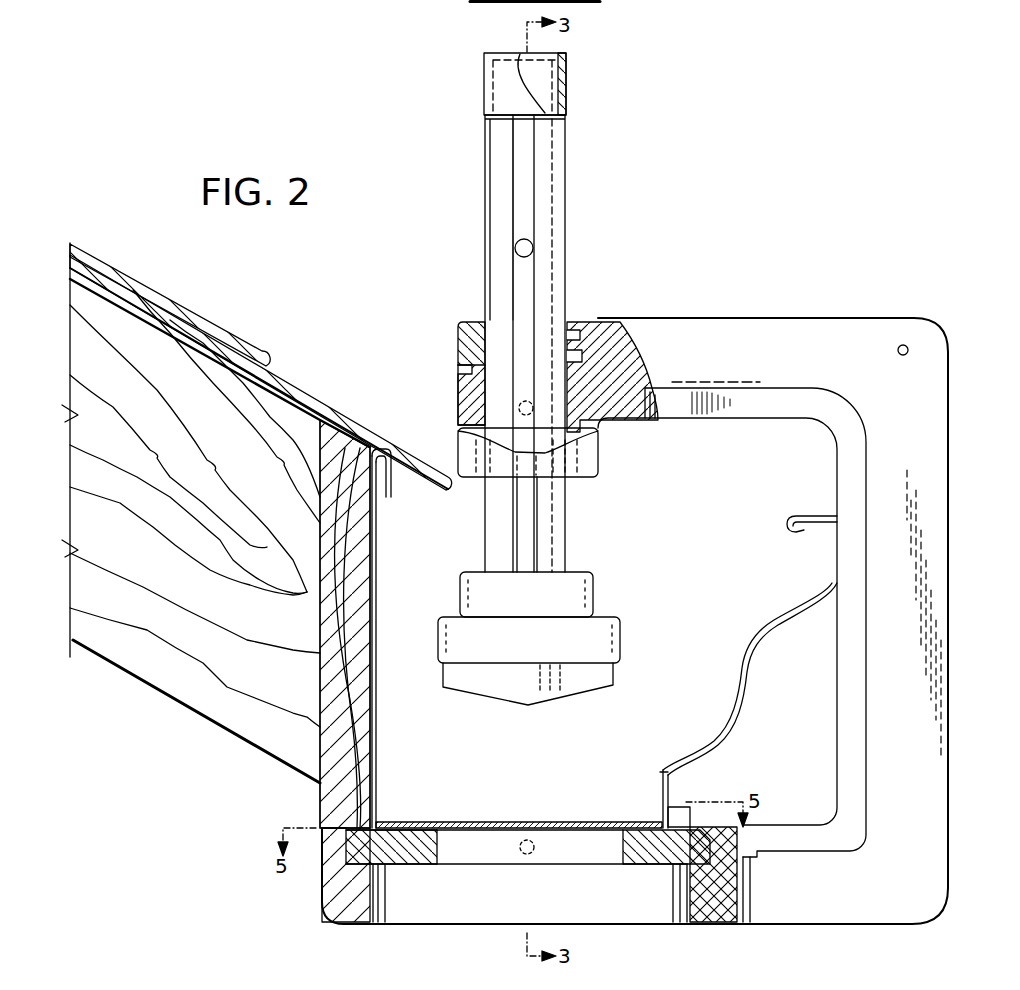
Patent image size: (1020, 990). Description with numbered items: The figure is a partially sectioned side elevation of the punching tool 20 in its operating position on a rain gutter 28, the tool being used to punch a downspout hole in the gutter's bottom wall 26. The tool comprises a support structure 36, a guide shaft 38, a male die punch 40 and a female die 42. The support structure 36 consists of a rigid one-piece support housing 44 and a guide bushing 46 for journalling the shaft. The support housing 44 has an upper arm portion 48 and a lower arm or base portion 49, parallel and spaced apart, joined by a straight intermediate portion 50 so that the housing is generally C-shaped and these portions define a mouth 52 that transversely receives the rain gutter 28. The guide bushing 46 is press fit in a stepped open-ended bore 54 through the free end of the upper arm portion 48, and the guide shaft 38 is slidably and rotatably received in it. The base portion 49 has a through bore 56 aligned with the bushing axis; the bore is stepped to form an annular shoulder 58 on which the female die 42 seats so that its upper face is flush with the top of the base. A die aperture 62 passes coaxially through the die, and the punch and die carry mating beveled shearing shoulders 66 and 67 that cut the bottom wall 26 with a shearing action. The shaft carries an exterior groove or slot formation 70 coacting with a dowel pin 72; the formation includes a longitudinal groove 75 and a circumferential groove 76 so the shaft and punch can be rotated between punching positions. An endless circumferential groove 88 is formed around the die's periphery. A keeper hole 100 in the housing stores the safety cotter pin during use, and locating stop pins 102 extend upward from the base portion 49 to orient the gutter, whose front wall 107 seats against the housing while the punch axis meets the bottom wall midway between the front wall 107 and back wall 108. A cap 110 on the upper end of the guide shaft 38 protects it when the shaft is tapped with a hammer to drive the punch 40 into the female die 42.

The punching tool 20 is at (612, 214).
The bottom wall 26 is at (660, 822).
The rain gutter 28 is at (752, 694).
The support structure 36 is at (427, 354).
The guide shaft 38 is at (485, 167).
The male die punch 40 is at (620, 650).
The female die 42 is at (656, 864).
The support housing 44 is at (642, 621).
The guide bushing 46 is at (470, 320).
The upper arm portion 48 is at (770, 361).
The lower arm or base portion 49 is at (778, 924).
The intermediate portion 50 is at (918, 574).
The mouth 52 is at (690, 534).
The stepped open-ended bore 54 is at (470, 390).
The through bore 56 is at (380, 829).
The annular shoulder 58 is at (365, 860).
The die aperture 62 is at (440, 862).
The shearing shoulder 66 is at (615, 670).
The shearing shoulder 67 is at (640, 822).
The groove or slot formation 70 is at (516, 295).
The dowel pin 72 is at (578, 322).
The longitudinal groove 75 is at (528, 175).
The circumferential groove 76 is at (592, 437).
The circumferential groove 88 is at (712, 846).
The keeper hole 100 is at (900, 345).
The locating stop pin 102 is at (690, 806).
The front wall 107 is at (836, 541).
The back wall 108 is at (377, 728).
The cap 110 is at (488, 58).